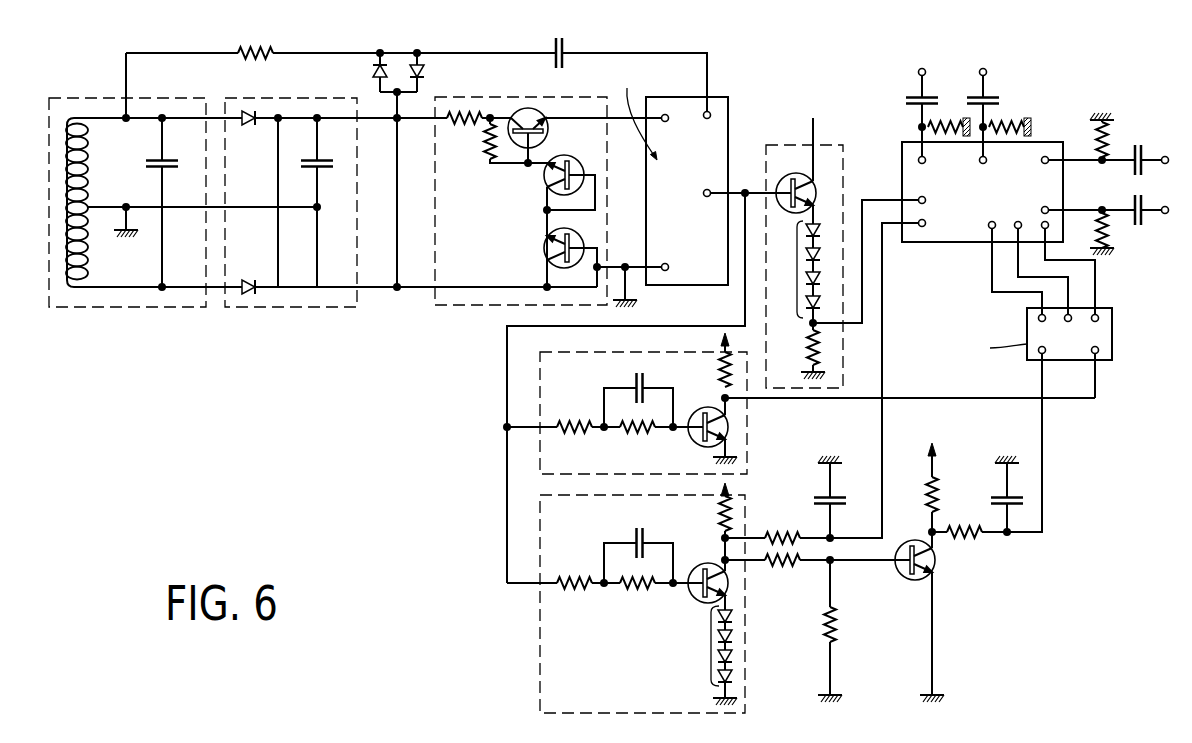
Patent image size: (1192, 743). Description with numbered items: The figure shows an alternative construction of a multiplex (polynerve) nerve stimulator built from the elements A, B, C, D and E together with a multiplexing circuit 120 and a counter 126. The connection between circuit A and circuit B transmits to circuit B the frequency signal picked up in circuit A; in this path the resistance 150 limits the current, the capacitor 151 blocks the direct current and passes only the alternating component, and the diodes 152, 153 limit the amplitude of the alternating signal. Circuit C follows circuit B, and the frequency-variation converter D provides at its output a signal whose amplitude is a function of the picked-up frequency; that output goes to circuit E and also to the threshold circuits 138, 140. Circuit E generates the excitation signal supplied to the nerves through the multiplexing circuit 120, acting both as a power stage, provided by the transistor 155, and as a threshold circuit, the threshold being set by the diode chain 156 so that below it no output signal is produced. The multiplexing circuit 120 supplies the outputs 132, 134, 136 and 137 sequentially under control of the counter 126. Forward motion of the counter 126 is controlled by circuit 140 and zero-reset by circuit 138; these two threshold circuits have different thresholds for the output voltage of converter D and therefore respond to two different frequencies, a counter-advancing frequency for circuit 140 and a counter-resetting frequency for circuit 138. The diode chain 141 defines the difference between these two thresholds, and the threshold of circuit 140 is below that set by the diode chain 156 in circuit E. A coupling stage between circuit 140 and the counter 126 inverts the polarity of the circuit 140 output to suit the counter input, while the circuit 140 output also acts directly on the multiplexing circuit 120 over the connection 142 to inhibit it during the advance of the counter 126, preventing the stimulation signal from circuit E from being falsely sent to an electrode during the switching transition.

The multiplexing circuit 120 is at (943, 243).
The counter 126 is at (1086, 350).
The output 132 is at (920, 72).
The output 134 is at (985, 72).
The output 136 is at (1165, 156).
The output 137 is at (1165, 214).
The threshold circuit 138 is at (540, 463).
The threshold circuit 140 is at (599, 598).
The diode chain 141 is at (703, 652).
The connection 142 is at (883, 417).
The resistance 150 is at (258, 50).
The capacitor 151 is at (566, 44).
The diode 152 is at (371, 72).
The diode 153 is at (424, 70).
The transistor 155 is at (810, 181).
The diode chain 156 is at (797, 268).
The circuit A is at (98, 308).
The circuit B is at (270, 308).
The circuit C is at (467, 306).
The frequency-variation converter D is at (722, 97).
The circuit E is at (788, 253).